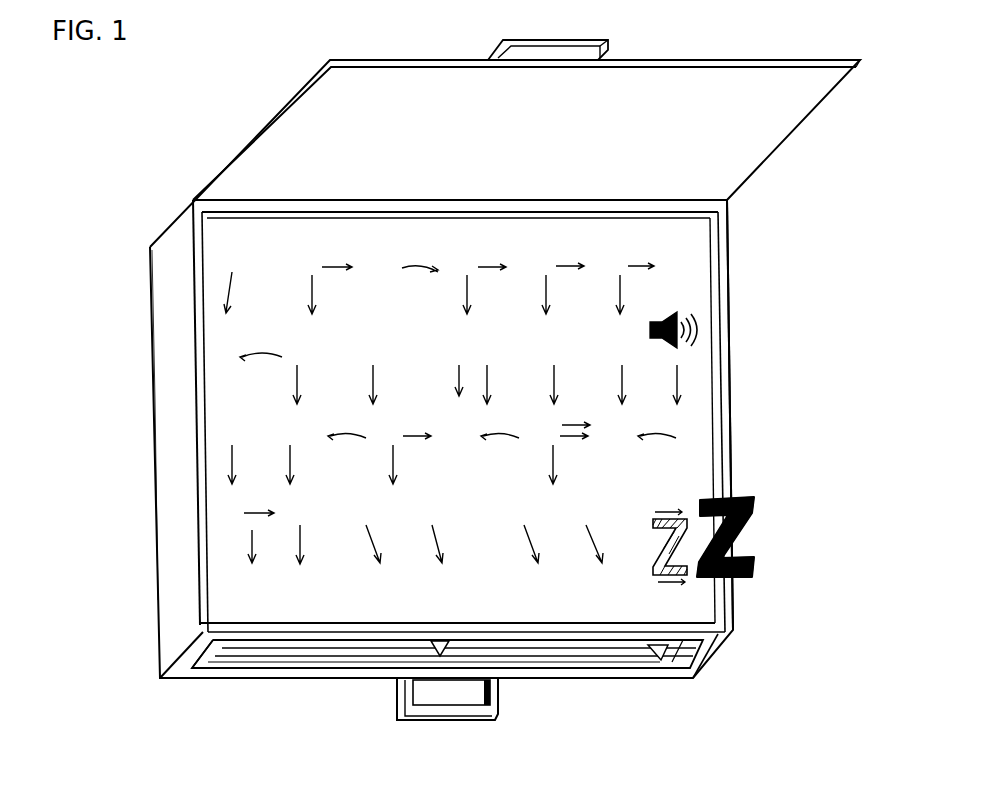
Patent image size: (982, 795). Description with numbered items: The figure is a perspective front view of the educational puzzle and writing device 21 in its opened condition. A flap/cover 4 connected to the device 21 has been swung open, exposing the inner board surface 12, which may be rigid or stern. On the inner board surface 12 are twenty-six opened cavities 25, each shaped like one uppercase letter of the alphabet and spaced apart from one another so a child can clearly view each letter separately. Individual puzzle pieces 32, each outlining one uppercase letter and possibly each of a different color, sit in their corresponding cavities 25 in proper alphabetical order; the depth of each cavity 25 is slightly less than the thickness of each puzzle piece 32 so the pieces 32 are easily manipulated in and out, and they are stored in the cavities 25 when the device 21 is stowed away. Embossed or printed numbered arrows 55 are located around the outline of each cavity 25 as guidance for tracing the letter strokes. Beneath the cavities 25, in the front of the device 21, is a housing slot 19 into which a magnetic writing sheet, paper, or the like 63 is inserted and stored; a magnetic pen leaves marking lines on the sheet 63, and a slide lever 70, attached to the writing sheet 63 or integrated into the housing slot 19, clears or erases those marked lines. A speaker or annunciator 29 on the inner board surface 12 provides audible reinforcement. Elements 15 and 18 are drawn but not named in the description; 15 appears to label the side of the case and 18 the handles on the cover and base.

The flap/cover 4 is at (308, 92).
The inner board surface 12 is at (633, 607).
The housing 15 is at (157, 505).
The handle 18 is at (610, 46).
The housing slot 19 is at (208, 664).
The educational puzzle and writing device 21 is at (173, 403).
The cavity 25 is at (682, 518).
The speaker 29 is at (692, 320).
The puzzle piece 32 is at (746, 565).
The numbered arrows 55 is at (245, 283).
The magnetic writing sheet 63 is at (430, 660).
The slide lever 70 is at (668, 652).